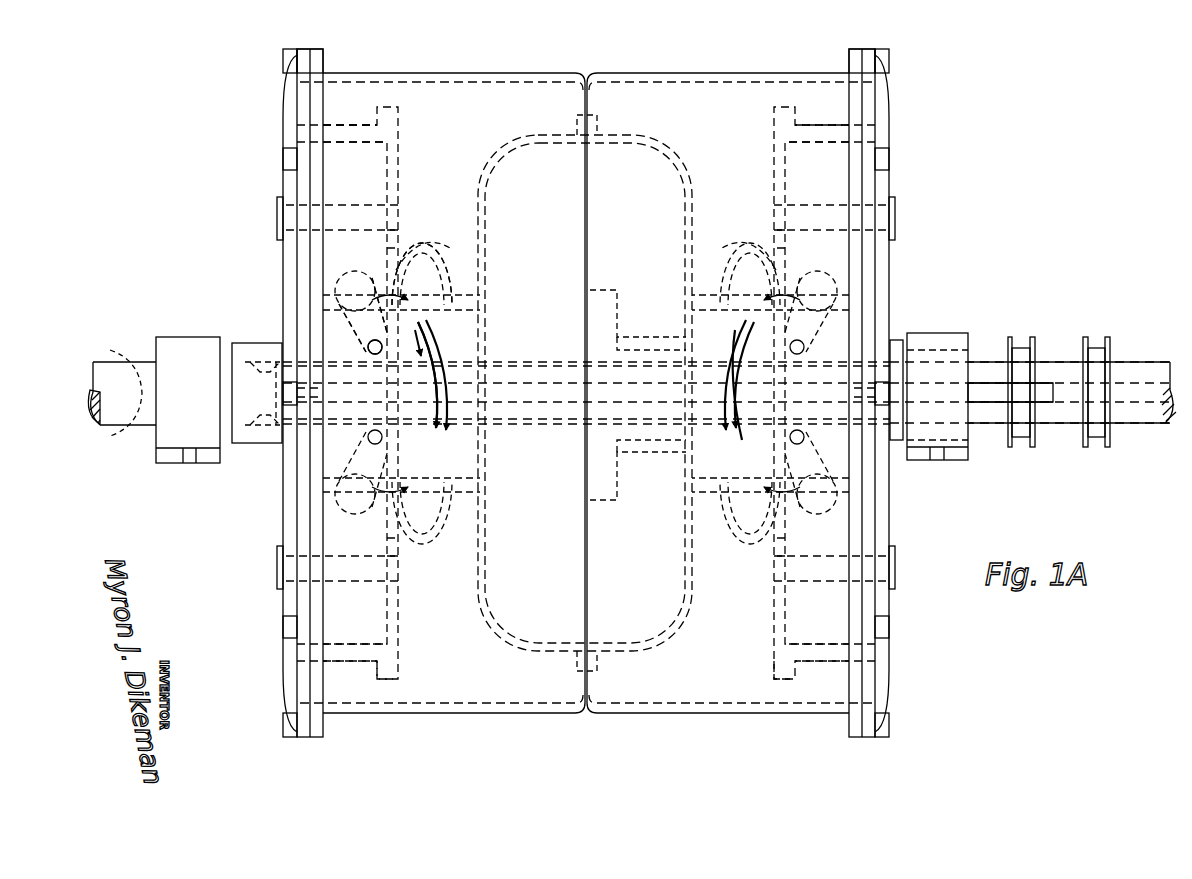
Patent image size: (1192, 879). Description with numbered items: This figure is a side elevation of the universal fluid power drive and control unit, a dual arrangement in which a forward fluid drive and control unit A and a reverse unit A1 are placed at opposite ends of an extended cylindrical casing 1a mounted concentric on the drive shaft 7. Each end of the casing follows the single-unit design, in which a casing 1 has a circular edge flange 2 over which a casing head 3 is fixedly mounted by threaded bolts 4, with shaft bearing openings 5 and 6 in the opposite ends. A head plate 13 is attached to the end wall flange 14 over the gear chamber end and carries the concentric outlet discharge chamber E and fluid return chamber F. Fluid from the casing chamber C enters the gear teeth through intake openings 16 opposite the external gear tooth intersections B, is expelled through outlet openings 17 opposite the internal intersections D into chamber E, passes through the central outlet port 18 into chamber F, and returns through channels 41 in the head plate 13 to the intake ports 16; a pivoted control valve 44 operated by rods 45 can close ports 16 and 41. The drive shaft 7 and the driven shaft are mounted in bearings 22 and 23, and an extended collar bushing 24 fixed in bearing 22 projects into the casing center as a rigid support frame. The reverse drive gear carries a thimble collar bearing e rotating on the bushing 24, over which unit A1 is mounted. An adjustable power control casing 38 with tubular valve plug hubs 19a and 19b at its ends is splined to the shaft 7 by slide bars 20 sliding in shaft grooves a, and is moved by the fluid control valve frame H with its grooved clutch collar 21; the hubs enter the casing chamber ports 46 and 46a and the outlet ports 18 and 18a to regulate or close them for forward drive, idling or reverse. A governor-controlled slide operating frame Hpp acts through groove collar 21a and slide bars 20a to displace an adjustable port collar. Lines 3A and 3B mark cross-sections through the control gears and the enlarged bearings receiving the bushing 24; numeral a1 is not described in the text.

The control unit casing 1 is at (617, 287).
The extended cylindrical casing 1a is at (440, 73).
The circular edge flange 2 is at (323, 53).
The casing head 3 is at (283, 513).
The threaded bolts 4 is at (290, 66).
The shaft bearing opening 5 is at (893, 440).
The shaft bearing opening 6 is at (238, 362).
The drive shaft 7 is at (982, 426).
The head plate 13 is at (399, 640).
The end wall flange 14 is at (377, 678).
The fluid intake opening 16 is at (345, 283).
The fluid outlet opening 17 is at (390, 275).
The outlet port 18 is at (430, 345).
The fluid outlet port 18a is at (742, 470).
The tubular valve plug hub 19a is at (462, 356).
The tubular valve plug hub 19b is at (700, 460).
The slide bars 20 is at (528, 368).
The slide bars 20a is at (1048, 424).
The grooved circular clutch collar 21 is at (1031, 340).
The groove collar 21a is at (1106, 340).
The bearing 22 is at (953, 461).
The bearing 23 is at (172, 463).
The extended collar bushing 24 is at (935, 350).
The adjustable power control casing 38 is at (622, 135).
The fluid return channel 41 is at (398, 494).
The pivoted control valve 44 is at (345, 305).
The operating rods 45 is at (470, 290).
The casing chamber port 46 is at (445, 358).
The casing chamber port 46a is at (736, 462).
The fluid drive and control unit A is at (352, 125).
The reverse unit A1 is at (818, 125).
The external gear tooth rotation intersection B is at (300, 491).
The casing chamber C is at (705, 643).
The internal gear teeth rotation intersection D is at (300, 292).
The outlet discharge chamber E is at (410, 268).
The fluid return chamber F is at (440, 270).
The fluid control valve frame H is at (1006, 376).
The slide operating frame Hpp is at (1086, 376).
The shaft slide groove a is at (975, 383).
The shaft portion a1 is at (1062, 418).
The thimble collar bearing e is at (620, 342).
The section line 3A- 3A is at (830, 58).
The section line 3B- 3B is at (708, 160).